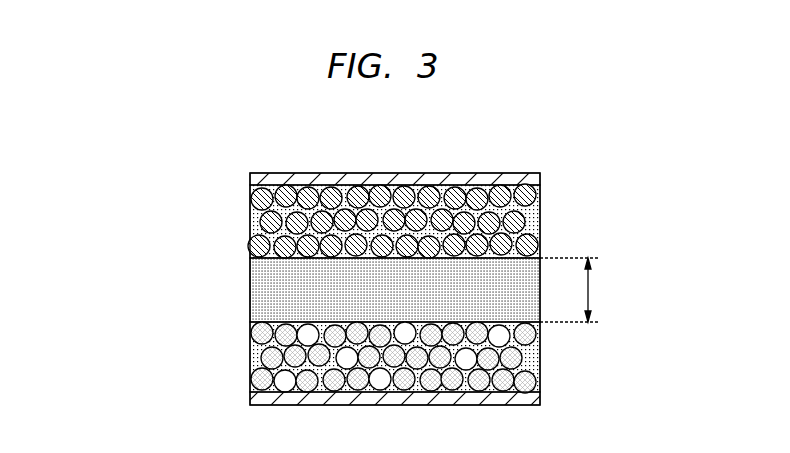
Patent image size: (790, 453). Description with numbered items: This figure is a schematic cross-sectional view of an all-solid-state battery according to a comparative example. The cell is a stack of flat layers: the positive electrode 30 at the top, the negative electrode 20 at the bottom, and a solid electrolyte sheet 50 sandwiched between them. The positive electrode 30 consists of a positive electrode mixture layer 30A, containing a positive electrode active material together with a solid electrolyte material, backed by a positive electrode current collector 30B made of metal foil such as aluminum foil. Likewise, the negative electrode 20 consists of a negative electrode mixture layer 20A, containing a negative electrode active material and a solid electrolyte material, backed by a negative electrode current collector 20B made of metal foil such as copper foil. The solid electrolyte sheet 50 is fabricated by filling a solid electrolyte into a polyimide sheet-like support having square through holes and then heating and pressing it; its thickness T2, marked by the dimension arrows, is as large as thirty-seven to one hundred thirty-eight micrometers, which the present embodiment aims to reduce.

The positive electrode 30 is at (315, 210).
The positive electrode mixture layer 30A is at (250, 219).
The positive electrode current collector 30B is at (250, 178).
The solid electrolyte layer 50 is at (250, 288).
The negative electrode 20 is at (316, 370).
The negative electrode mixture layer 20A is at (250, 352).
The negative electrode current collector 20B is at (250, 398).
The thickness of the sheet T2 is at (588, 290).